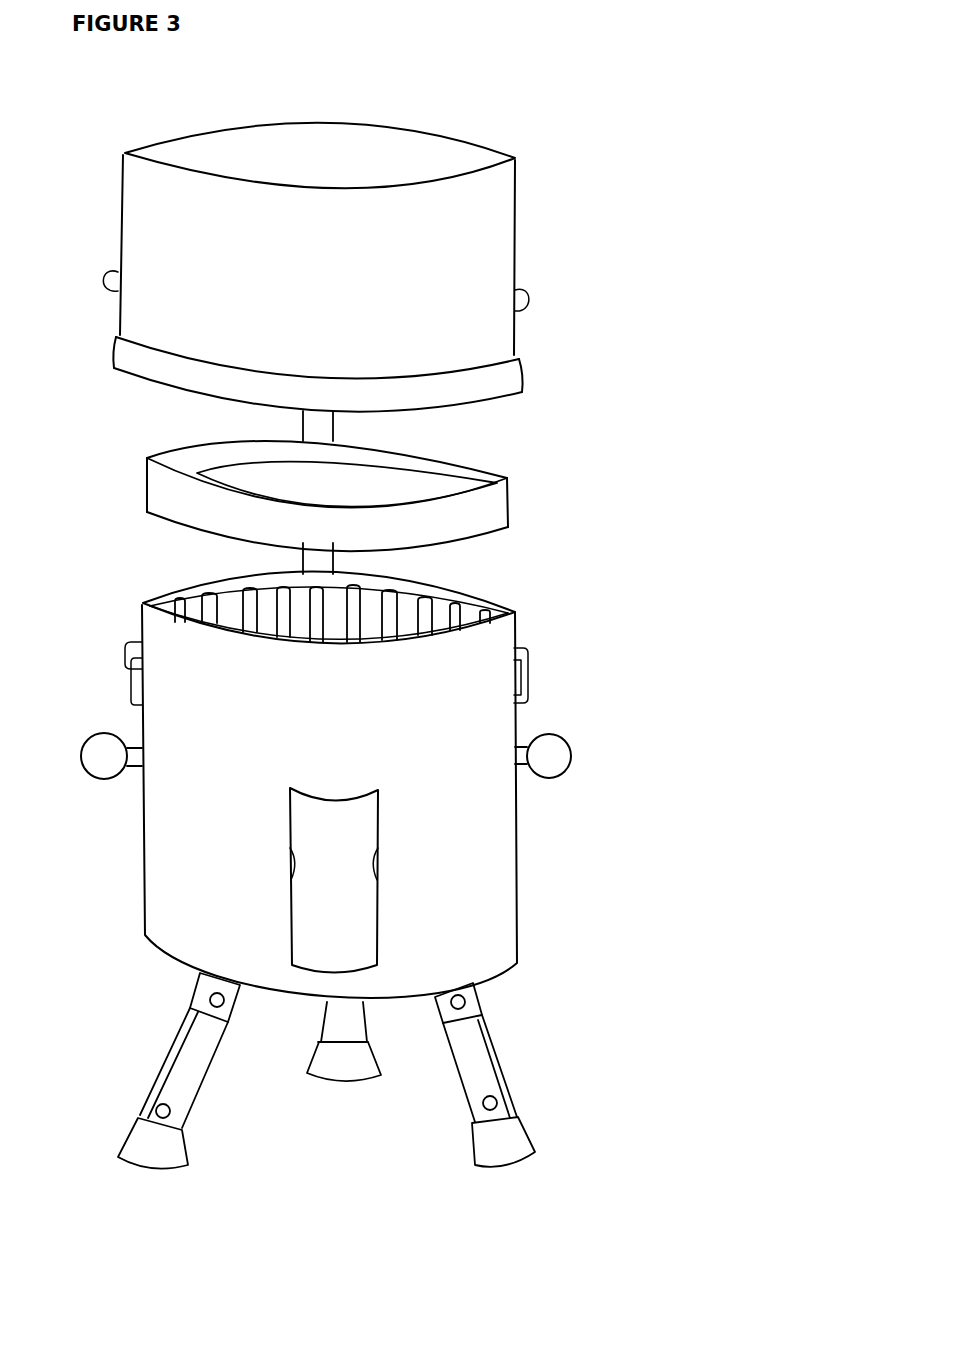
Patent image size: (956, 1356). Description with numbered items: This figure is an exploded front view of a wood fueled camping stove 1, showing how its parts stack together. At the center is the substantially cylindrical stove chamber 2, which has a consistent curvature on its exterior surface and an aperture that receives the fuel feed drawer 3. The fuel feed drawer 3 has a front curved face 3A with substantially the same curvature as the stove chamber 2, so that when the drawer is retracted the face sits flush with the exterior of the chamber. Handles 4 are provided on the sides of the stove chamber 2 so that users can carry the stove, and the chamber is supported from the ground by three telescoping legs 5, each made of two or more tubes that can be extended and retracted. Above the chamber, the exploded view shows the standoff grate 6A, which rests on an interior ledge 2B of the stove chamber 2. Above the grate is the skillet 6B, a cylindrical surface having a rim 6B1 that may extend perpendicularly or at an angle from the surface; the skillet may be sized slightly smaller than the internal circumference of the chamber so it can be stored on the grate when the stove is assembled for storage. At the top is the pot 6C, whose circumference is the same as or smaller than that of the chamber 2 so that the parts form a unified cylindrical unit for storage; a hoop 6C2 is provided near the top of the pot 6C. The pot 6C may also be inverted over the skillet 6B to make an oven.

The wood fueled camping stove 1 is at (606, 186).
The stove chamber 2 is at (480, 888).
The interior ledge 2B is at (408, 597).
The fuel feed drawer 3 is at (352, 937).
The front curved face 3A is at (322, 905).
The handles 4 is at (575, 758).
The telescoping legs 5 is at (210, 1178).
The standoff grate 6A is at (515, 610).
The skillet 6B is at (515, 502).
The rim 6B1 is at (145, 492).
The pot 6C is at (515, 271).
The hoop 6C2 is at (115, 352).